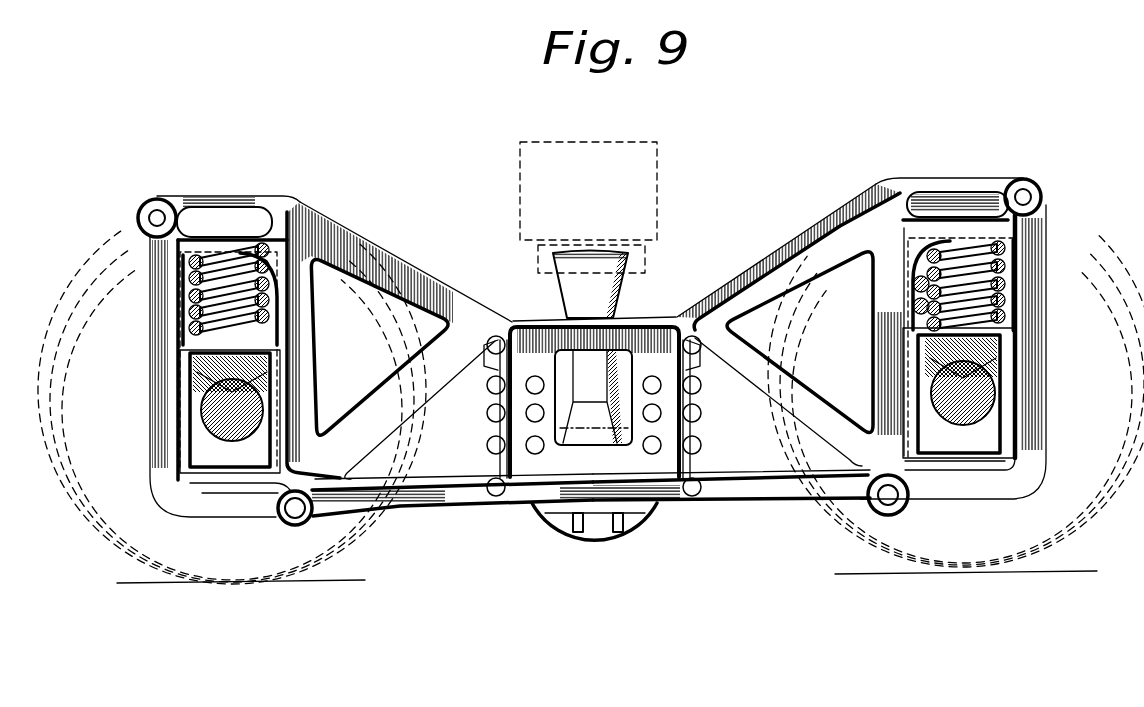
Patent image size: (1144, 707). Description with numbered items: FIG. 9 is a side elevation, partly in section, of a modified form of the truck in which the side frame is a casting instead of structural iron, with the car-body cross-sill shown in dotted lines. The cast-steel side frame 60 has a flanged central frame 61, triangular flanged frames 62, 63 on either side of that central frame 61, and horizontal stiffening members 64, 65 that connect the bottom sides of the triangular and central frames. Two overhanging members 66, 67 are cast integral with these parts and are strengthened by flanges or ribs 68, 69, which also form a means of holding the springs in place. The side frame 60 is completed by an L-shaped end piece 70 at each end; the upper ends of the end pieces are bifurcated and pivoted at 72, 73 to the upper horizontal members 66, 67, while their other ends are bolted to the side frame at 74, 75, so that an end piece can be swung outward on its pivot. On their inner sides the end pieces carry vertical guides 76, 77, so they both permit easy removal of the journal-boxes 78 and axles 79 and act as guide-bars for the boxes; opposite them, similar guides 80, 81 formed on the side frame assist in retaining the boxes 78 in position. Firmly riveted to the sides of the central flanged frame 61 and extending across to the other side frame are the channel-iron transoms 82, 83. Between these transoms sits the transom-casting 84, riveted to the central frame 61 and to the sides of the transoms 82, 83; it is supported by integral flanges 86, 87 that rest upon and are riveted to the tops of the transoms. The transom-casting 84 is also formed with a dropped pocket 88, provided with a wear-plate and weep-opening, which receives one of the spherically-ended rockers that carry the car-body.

The cast-steel side frame 60 is at (868, 190).
The flanged central frame 61 is at (640, 320).
The triangular flanged frame 62 is at (352, 427).
The triangular flanged frame 63 is at (813, 400).
The horizontal stiffening member 64 is at (440, 490).
The horizontal stiffening member 65 is at (780, 473).
The overhanging member 66 is at (257, 196).
The overhanging member 67 is at (1000, 183).
The flange or rib 68 is at (265, 250).
The flange or rib 69 is at (917, 243).
The L-shaped end piece 70 is at (157, 397).
The pivot 72 is at (150, 220).
The pivot 73 is at (1041, 193).
The bolted connection 74 is at (297, 513).
The bolted connection 75 is at (897, 507).
The vertical guide 76 is at (282, 337).
The vertical guide 77 is at (907, 320).
The journal-box 78 is at (177, 367).
The axle 79 is at (223, 425).
The guide 80 is at (177, 313).
The guide 81 is at (1013, 320).
The transom 82 is at (498, 433).
The transom 83 is at (693, 427).
The transom-casting 84 is at (630, 437).
The integral flange 86 is at (502, 343).
The integral flange 87 is at (687, 347).
The dropped pocket 88 is at (605, 507).